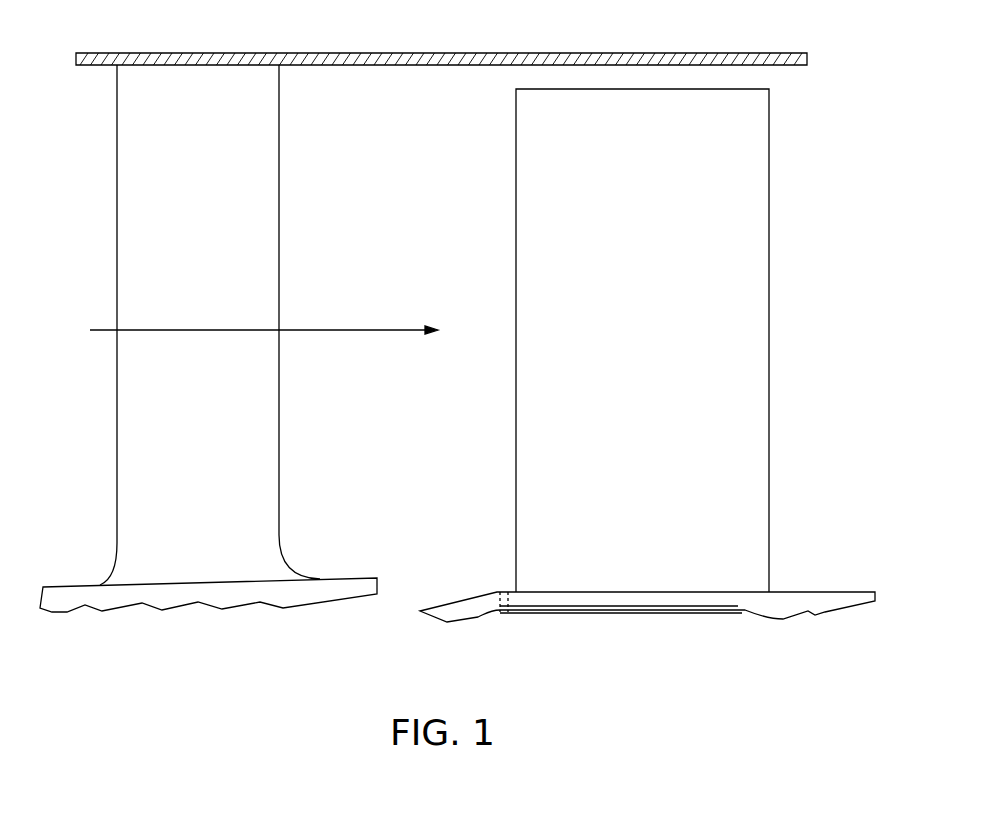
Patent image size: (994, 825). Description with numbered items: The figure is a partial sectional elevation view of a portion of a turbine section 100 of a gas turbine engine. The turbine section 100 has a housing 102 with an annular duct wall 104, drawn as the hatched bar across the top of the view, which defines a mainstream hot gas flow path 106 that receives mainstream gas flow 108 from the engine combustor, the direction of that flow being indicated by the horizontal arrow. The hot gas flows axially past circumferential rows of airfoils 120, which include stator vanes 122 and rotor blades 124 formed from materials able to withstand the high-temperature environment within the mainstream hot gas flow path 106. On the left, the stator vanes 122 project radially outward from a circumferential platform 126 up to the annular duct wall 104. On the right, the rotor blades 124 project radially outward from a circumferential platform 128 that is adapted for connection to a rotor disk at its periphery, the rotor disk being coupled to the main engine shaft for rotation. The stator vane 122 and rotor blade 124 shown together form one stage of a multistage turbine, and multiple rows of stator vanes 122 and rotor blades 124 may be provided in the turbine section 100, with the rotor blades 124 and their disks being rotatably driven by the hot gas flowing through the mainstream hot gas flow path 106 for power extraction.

The turbine section 100 is at (822, 262).
The housing 102 is at (788, 70).
The annular duct wall 104 is at (433, 65).
The mainstream hot gas flow path 106 is at (375, 87).
The mainstream gas flow 108 is at (348, 330).
The airfoils 120 is at (505, 238).
The stator vanes 122 is at (127, 157).
The rotor blades 124 is at (530, 157).
The circumferential platform 126 is at (73, 583).
The circumferential platform 128 is at (820, 592).